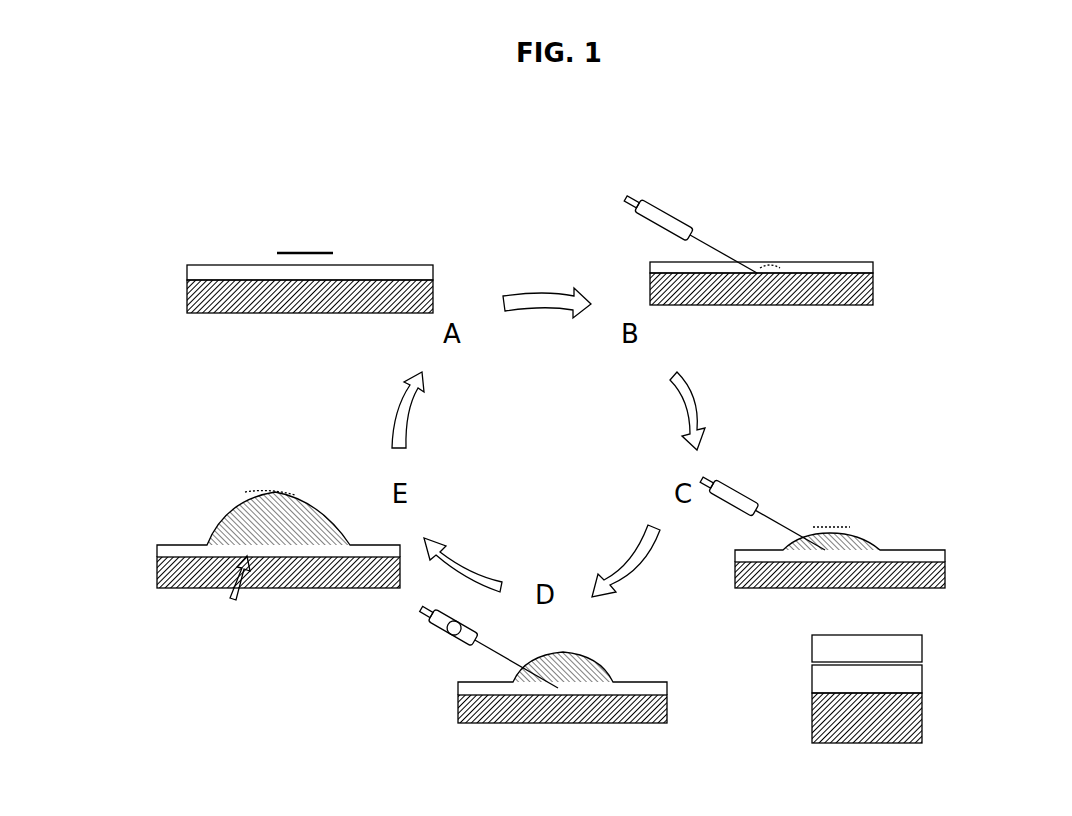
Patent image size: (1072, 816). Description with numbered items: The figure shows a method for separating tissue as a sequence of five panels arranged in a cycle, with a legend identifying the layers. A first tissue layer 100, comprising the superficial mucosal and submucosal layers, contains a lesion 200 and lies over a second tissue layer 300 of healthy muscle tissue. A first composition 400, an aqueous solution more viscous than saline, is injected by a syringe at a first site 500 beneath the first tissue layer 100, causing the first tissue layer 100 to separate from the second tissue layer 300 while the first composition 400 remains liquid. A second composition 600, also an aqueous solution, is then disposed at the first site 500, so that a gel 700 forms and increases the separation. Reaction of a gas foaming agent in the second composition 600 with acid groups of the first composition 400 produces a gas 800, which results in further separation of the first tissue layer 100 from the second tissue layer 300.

The first tissue layer 100 is at (183, 259).
The lesion 200 is at (336, 201).
The second tissue layer 300 is at (183, 294).
The first composition 400 is at (674, 210).
The first site 500 is at (772, 268).
The second composition 600 is at (550, 690).
The gel 700 is at (226, 474).
The gas 800 is at (242, 609).